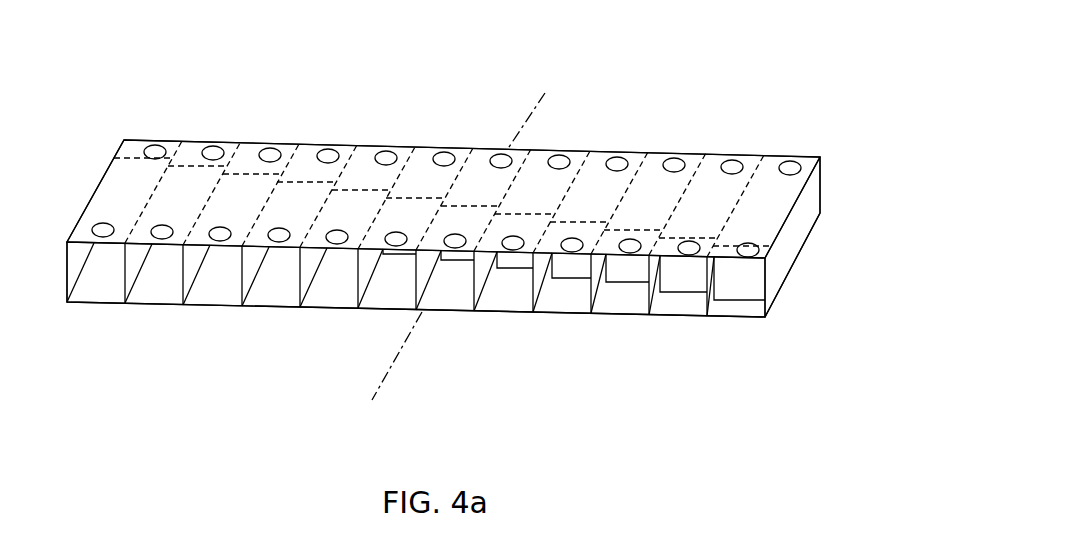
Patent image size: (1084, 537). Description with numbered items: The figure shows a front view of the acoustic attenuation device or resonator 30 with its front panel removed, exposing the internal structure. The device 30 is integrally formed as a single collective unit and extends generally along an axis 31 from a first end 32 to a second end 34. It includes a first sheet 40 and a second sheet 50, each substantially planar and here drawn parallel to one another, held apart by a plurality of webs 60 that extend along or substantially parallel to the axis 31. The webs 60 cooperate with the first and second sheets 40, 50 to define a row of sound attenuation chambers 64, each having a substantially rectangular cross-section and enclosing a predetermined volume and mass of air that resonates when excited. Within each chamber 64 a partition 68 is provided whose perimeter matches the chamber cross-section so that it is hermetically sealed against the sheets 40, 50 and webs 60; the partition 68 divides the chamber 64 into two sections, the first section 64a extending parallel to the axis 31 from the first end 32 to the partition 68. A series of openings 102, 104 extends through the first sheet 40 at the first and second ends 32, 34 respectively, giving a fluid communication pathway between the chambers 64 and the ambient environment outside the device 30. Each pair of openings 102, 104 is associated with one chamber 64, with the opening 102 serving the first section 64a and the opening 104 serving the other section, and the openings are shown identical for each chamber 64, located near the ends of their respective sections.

The acoustic attenuation device 30 is at (97, 114).
The axis 31 is at (524, 106).
The first end 32 is at (261, 339).
The second end 34 is at (267, 116).
The first sheet 40 is at (545, 154).
The second sheet 50 is at (505, 295).
The web 60 is at (794, 257).
The sound attenuation chamber 64 is at (335, 284).
The first chamber section 64a is at (106, 267).
The partition 68 is at (360, 190).
The opening 102 is at (626, 256).
The opening 104 is at (678, 157).